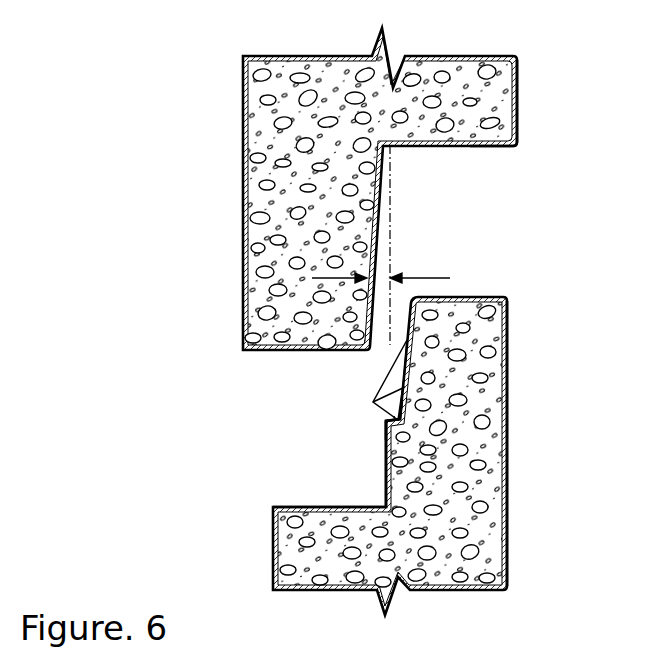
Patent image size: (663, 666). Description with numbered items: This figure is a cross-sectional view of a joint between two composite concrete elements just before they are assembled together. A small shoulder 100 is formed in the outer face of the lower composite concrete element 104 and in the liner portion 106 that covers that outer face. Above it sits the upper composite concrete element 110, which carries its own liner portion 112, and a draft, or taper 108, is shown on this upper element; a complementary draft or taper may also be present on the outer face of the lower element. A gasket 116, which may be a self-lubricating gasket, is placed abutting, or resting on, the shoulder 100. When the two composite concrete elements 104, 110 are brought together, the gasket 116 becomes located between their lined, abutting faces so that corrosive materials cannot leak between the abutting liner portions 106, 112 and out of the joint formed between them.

The shoulder 100 is at (385, 415).
The lower composite concrete element 104 is at (305, 552).
The liner portion 106 is at (322, 505).
The taper 108 is at (450, 278).
The upper composite concrete element 110 is at (265, 143).
The liner portion 112 is at (514, 101).
The gasket 116 is at (395, 383).